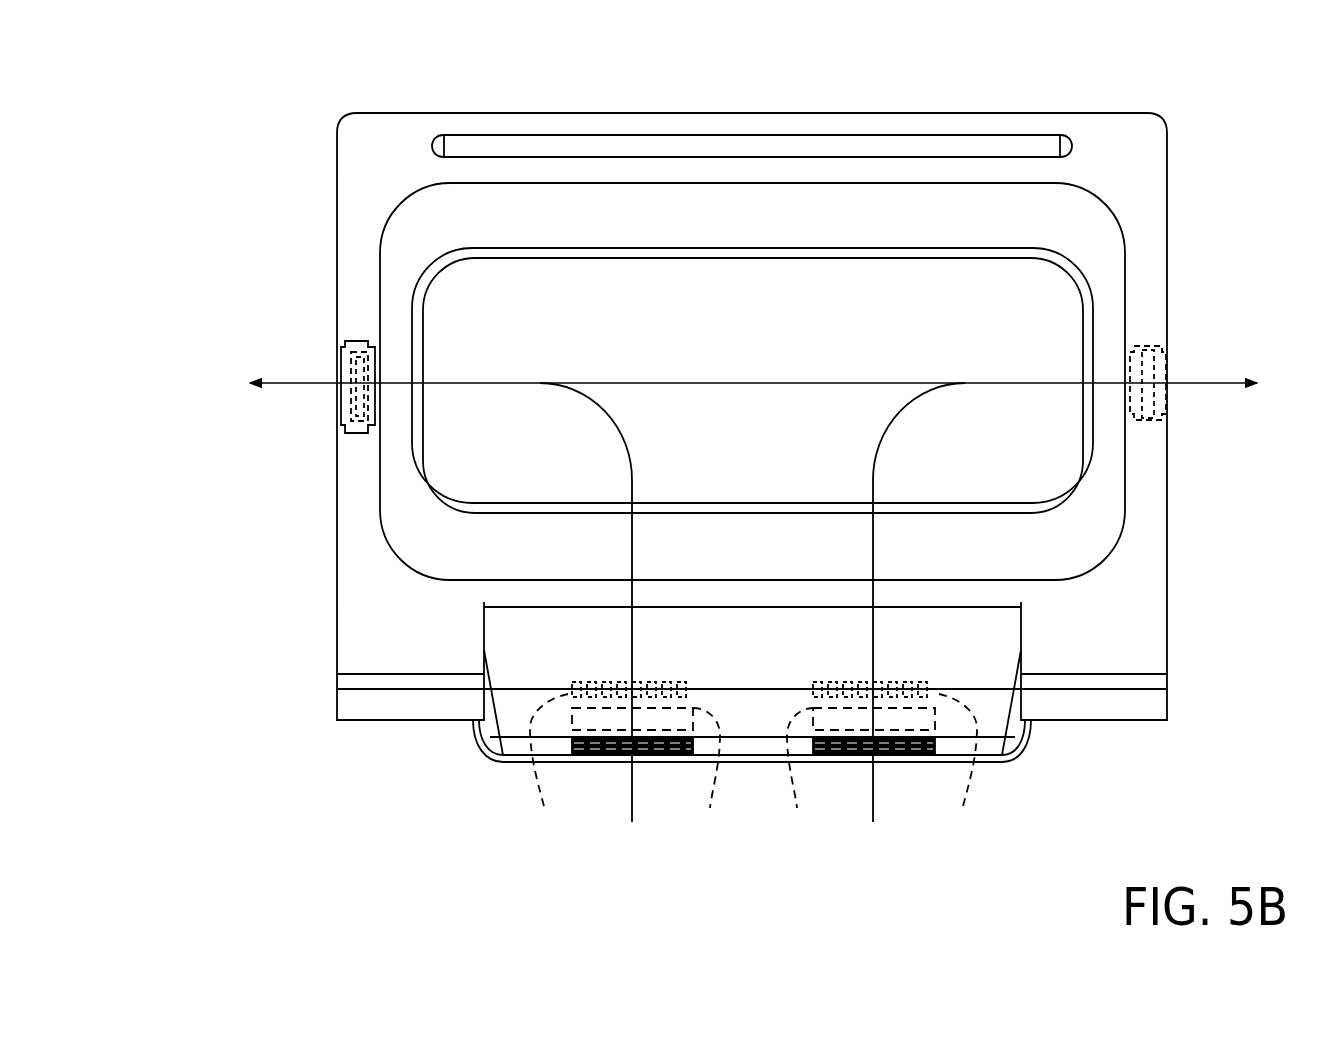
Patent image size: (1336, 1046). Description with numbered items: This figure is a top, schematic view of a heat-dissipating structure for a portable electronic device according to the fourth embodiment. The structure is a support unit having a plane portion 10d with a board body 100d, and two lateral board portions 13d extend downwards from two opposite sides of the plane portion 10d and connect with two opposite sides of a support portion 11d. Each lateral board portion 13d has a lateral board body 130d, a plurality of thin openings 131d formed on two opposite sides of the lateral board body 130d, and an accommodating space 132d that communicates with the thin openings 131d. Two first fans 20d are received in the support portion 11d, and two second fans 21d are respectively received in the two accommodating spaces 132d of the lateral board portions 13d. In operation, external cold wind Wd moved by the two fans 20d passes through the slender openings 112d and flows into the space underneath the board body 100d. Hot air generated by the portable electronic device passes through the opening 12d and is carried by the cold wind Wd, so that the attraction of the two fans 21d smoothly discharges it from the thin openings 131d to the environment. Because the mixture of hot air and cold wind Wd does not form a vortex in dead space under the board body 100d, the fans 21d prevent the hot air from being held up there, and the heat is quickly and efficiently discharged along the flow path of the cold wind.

The plane portion 10d is at (1174, 137).
The board body 100d is at (1140, 200).
The opening 12d is at (1044, 323).
The lateral board portion 13d is at (1171, 513).
The lateral board body 130d is at (340, 530).
The thin openings 131d is at (342, 387).
The accommodating space 132d is at (357, 433).
The second fan 21d is at (360, 341).
The first fan 20d is at (753, 772).
The slender openings 112d is at (572, 745).
The support portion 11d is at (1130, 632).
The cold wind Wd is at (753, 603).